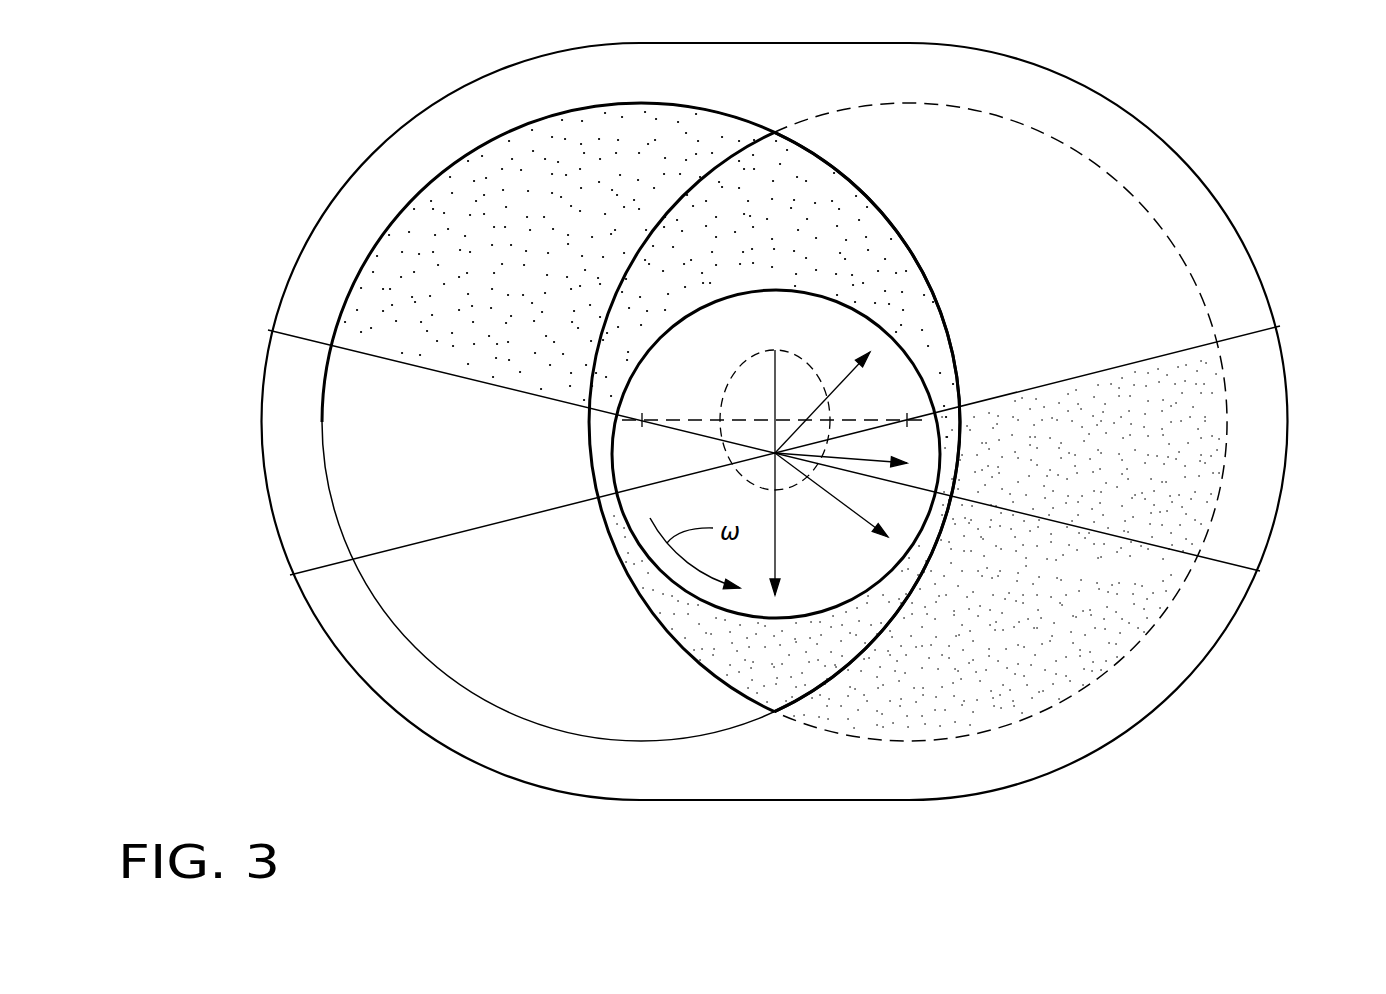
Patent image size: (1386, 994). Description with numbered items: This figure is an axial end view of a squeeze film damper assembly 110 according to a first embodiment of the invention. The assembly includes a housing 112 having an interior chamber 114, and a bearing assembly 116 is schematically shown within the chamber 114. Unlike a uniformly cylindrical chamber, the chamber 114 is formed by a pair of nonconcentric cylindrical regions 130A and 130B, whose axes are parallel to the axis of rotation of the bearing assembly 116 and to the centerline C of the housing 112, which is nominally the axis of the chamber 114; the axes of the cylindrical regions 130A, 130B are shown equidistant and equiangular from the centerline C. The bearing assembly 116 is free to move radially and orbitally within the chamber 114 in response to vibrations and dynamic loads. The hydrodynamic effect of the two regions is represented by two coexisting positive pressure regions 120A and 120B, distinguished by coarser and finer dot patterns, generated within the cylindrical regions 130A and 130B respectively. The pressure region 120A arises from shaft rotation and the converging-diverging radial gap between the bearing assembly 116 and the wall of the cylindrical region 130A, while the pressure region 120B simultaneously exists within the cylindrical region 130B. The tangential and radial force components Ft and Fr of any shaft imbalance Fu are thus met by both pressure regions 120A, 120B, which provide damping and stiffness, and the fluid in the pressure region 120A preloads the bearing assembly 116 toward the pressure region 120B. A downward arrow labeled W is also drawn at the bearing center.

The squeeze film damper assembly 110 is at (769, 417).
The housing 112 is at (355, 208).
The interior chamber 114 is at (473, 148).
The bearing assembly 116 is at (672, 588).
The positive pressure region 120A is at (820, 190).
The positive pressure region 120B is at (1205, 387).
The cylindrical region 130A is at (912, 248).
The cylindrical region 130B is at (1103, 161).
The centerline C is at (770, 418).
The tangential force component Ft is at (835, 402).
The shaft imbalance Fu is at (848, 449).
The radial force component Fr is at (831, 508).
The weight force W is at (790, 531).